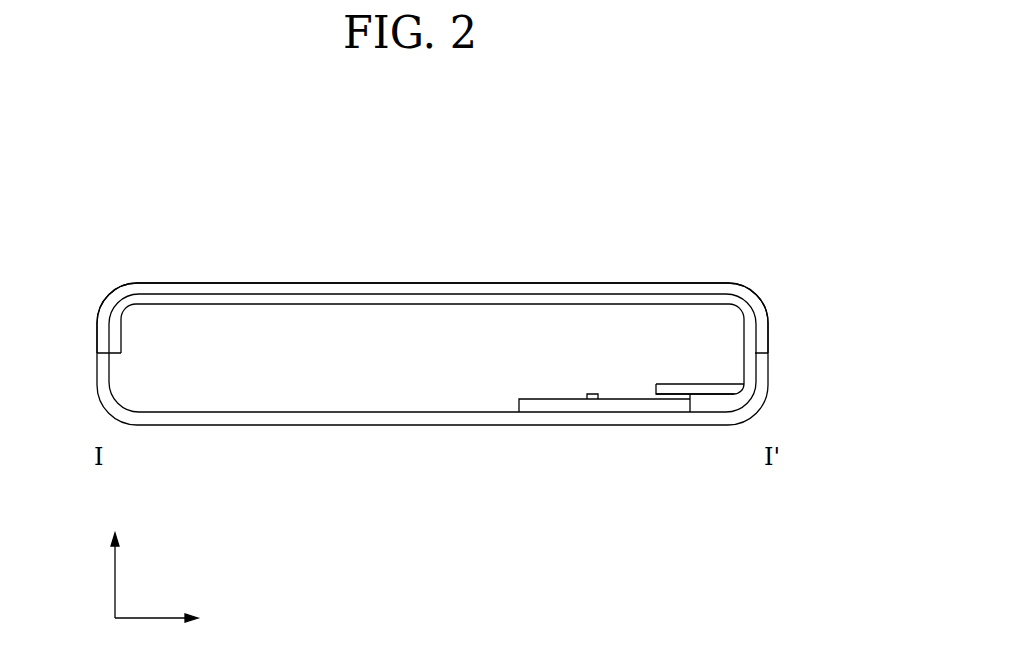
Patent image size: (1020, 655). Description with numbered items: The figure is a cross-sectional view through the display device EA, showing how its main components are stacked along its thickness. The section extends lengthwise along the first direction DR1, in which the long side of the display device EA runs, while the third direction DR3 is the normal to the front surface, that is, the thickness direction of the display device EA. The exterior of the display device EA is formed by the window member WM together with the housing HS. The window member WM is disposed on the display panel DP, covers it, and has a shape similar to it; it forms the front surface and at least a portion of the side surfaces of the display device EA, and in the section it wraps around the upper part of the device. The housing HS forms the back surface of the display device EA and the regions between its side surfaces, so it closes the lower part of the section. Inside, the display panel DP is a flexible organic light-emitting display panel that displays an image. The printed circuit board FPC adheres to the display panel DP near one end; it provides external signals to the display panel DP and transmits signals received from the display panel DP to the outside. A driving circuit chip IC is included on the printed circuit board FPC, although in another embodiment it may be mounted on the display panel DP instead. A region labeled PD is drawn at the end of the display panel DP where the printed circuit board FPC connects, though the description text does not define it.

The display device EA is at (718, 201).
The window member WM is at (432, 283).
The display panel DP is at (487, 304).
The housing HS is at (429, 425).
The printed circuit board FPC is at (536, 412).
The driving circuit chip IC is at (591, 399).
The pad portion PD is at (667, 394).
The first direction DR1 is at (176, 617).
The third direction DR3 is at (114, 563).